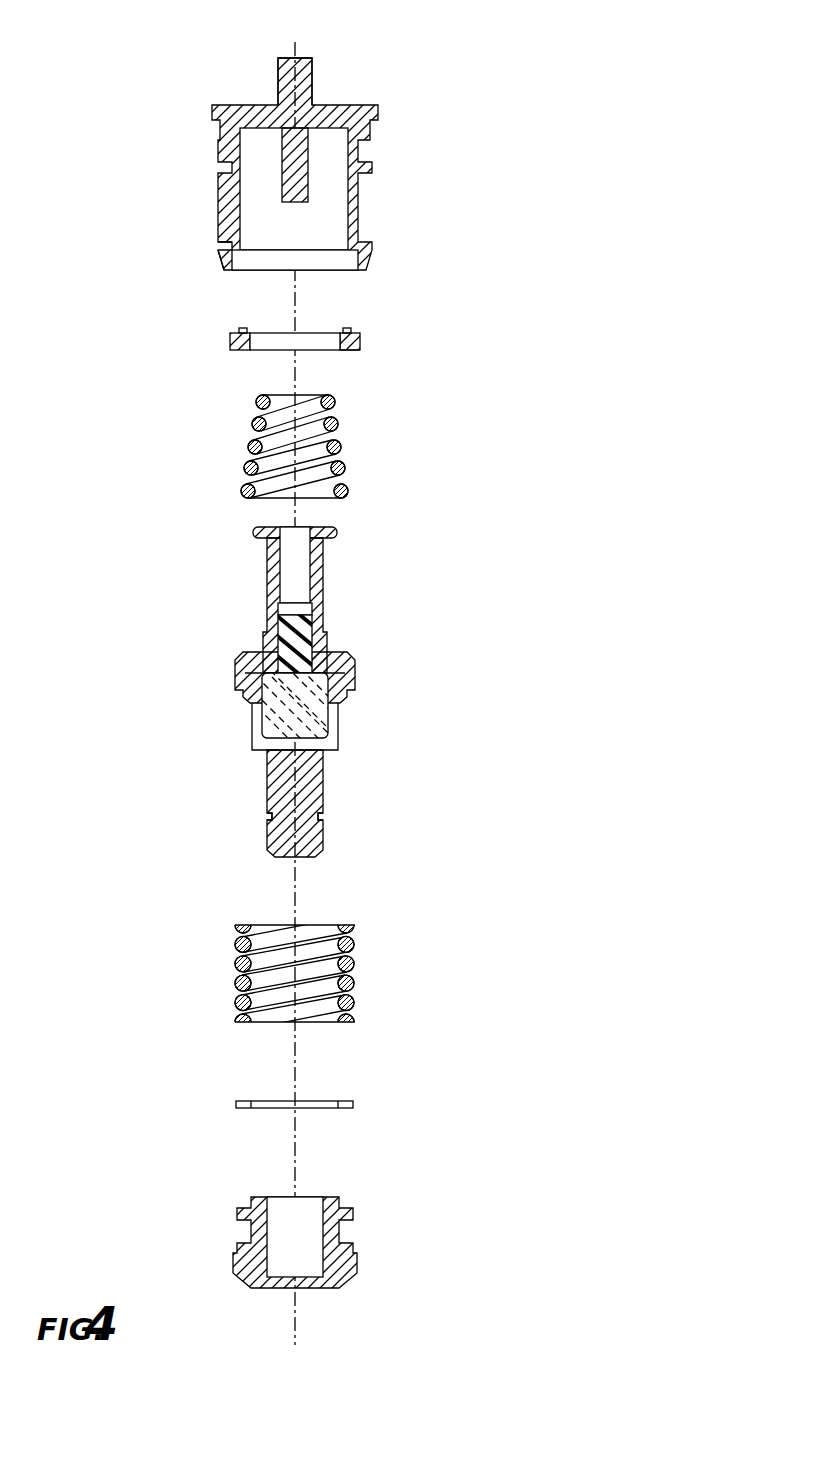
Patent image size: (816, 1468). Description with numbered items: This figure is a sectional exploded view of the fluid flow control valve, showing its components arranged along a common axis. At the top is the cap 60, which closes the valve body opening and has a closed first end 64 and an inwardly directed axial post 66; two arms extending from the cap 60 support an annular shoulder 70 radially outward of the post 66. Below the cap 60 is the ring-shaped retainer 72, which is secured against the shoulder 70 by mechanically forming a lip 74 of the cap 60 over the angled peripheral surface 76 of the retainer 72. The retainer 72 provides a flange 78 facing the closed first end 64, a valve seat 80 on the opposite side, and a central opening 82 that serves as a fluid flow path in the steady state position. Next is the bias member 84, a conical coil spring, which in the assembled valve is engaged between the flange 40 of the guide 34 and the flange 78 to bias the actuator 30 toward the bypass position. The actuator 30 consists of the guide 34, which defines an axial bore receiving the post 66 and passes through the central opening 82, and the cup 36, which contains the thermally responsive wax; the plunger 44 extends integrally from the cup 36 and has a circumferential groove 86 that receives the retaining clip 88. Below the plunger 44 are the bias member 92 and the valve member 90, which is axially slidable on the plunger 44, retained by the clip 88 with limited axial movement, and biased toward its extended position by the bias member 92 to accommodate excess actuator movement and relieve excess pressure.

The actuator 30 is at (303, 687).
The guide 34 is at (323, 610).
The cup 36 is at (344, 736).
The flange 40 is at (336, 535).
The plunger 44 is at (323, 793).
The cap 60 is at (274, 174).
The closed first end 64 is at (329, 105).
The axial post 66 is at (297, 184).
The annular shoulder 70 is at (325, 248).
The retainer 72 is at (300, 348).
The lip 74 is at (222, 257).
The angled peripheral surface 76 is at (360, 342).
The flange 78 is at (342, 327).
The valve seat 80 is at (342, 350).
The central opening 82 is at (272, 340).
The bias member 84 is at (244, 443).
The circumferential groove 86 is at (323, 817).
The retaining clip 88 is at (233, 1103).
The valve member 90 is at (229, 1263).
The bias member 92 is at (227, 947).